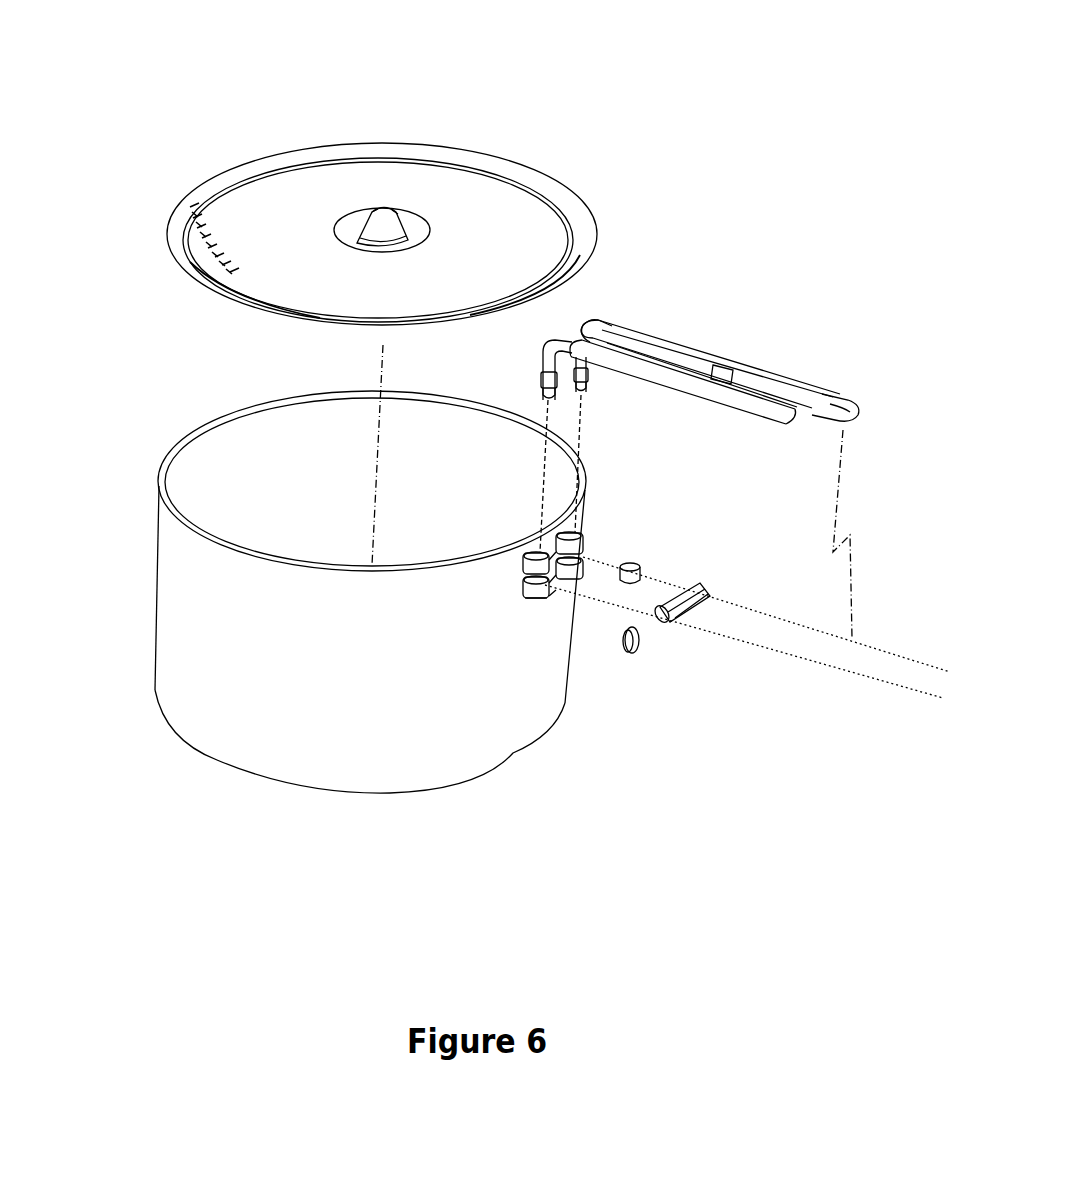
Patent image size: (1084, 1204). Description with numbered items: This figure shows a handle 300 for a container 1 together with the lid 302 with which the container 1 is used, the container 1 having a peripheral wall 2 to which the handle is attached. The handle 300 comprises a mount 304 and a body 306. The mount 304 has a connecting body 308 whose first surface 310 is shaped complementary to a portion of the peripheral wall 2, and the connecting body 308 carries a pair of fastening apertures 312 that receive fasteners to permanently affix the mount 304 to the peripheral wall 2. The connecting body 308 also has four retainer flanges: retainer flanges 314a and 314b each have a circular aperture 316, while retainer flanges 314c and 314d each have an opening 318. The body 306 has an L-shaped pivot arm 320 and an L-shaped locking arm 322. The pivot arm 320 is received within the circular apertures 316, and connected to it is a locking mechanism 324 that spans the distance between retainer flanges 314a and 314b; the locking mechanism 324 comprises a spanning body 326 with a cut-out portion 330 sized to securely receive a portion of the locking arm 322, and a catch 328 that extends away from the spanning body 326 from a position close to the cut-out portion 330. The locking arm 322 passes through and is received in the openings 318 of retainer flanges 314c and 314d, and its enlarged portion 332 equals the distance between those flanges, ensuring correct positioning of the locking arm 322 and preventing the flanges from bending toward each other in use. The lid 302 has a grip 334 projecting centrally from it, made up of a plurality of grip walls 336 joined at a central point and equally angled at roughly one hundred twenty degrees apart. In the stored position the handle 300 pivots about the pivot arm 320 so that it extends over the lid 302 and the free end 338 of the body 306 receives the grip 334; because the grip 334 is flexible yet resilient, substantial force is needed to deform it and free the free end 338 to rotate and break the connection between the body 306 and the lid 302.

The container 1 is at (314, 590).
The peripheral wall 2 is at (370, 569).
The handle 300 is at (747, 564).
The lid 302 is at (382, 165).
The mount 304 is at (537, 600).
The body 306 is at (766, 333).
The connecting body 308 is at (548, 577).
The first surface 310 is at (522, 572).
The fastening apertures 312 is at (542, 546).
The retainer flange 314a is at (577, 535).
The retainer flange 314b is at (578, 562).
The retainer flange 314c is at (522, 565).
The retainer flange 314d is at (527, 590).
The circular aperture 316 is at (653, 524).
The opening 318 is at (448, 626).
The pivot arm 320 is at (620, 327).
The locking arm 322 is at (598, 355).
The locking mechanism 324 is at (705, 658).
The spanning body 326 is at (678, 577).
The catch 328 is at (635, 652).
The cut-out portion 330 is at (663, 605).
The enlarged portion 332 is at (541, 380).
The grip 334 is at (398, 247).
The grip walls 336 is at (387, 222).
The free end 338 is at (862, 413).